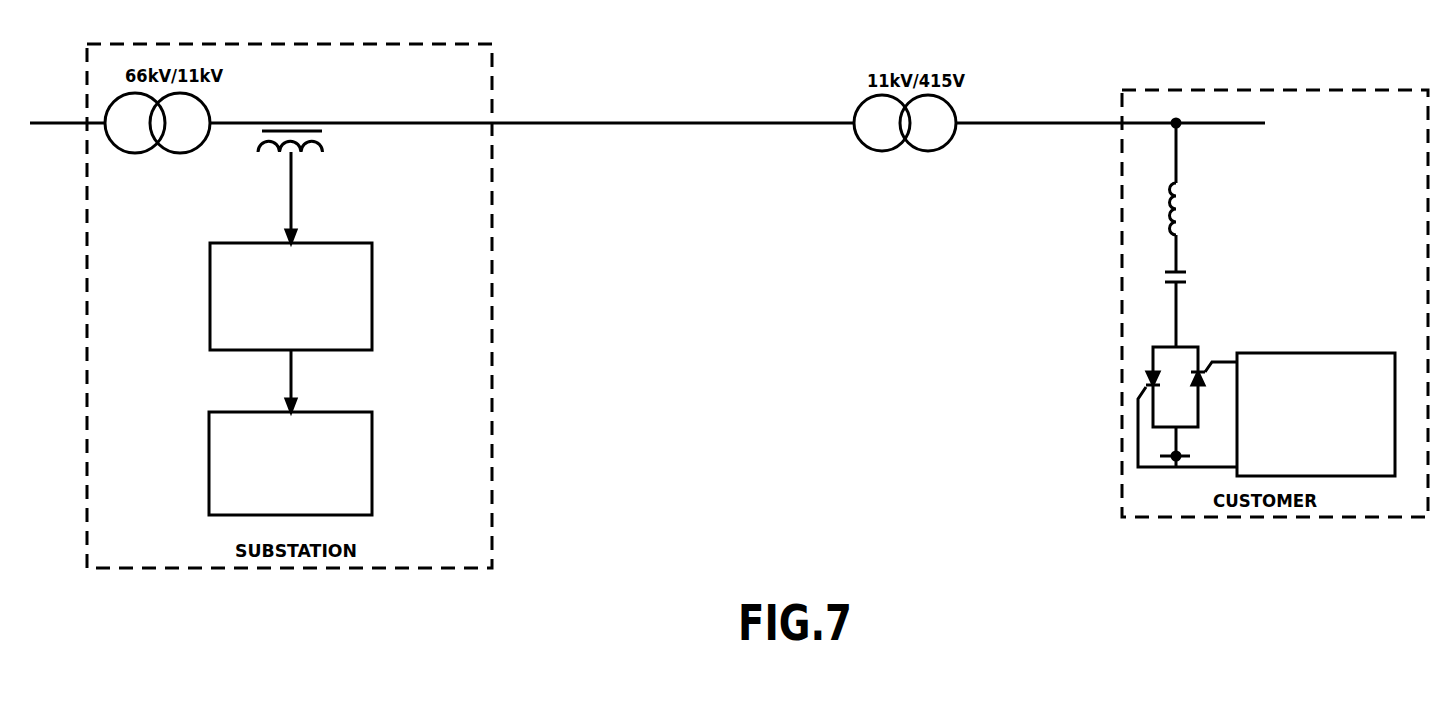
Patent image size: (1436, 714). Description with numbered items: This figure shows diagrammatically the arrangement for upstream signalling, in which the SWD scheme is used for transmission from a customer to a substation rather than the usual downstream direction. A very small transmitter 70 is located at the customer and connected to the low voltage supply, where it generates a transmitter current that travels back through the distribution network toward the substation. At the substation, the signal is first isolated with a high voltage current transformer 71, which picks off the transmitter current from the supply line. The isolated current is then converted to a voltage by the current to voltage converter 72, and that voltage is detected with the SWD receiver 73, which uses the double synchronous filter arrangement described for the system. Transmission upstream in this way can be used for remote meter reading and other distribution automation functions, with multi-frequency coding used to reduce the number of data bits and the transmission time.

The transmitter 70 is at (1118, 440).
The current transformer 71 is at (320, 150).
The current to voltage converter 72 is at (372, 310).
The SWD receiver 73 is at (372, 478).